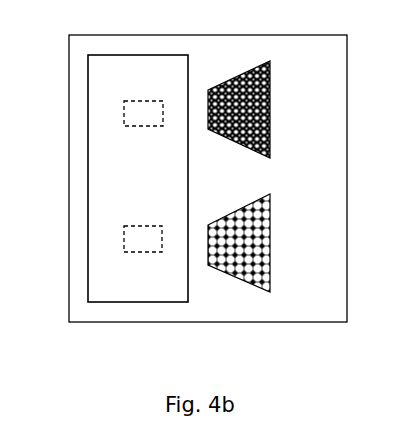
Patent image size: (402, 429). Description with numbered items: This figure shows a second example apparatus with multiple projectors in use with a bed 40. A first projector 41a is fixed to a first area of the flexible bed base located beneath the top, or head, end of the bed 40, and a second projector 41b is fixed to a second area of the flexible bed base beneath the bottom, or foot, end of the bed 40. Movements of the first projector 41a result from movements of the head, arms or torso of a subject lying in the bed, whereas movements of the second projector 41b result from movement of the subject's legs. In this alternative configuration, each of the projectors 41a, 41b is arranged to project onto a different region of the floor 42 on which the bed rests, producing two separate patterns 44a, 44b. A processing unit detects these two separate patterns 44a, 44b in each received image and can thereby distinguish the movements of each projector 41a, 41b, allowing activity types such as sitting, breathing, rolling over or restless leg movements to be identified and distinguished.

The bed 40 is at (150, 176).
The first projector 41a is at (129, 110).
The second projector 41b is at (129, 241).
The floor 42 is at (315, 176).
The first projected pattern 44a is at (270, 98).
The second projected pattern 44b is at (270, 232).